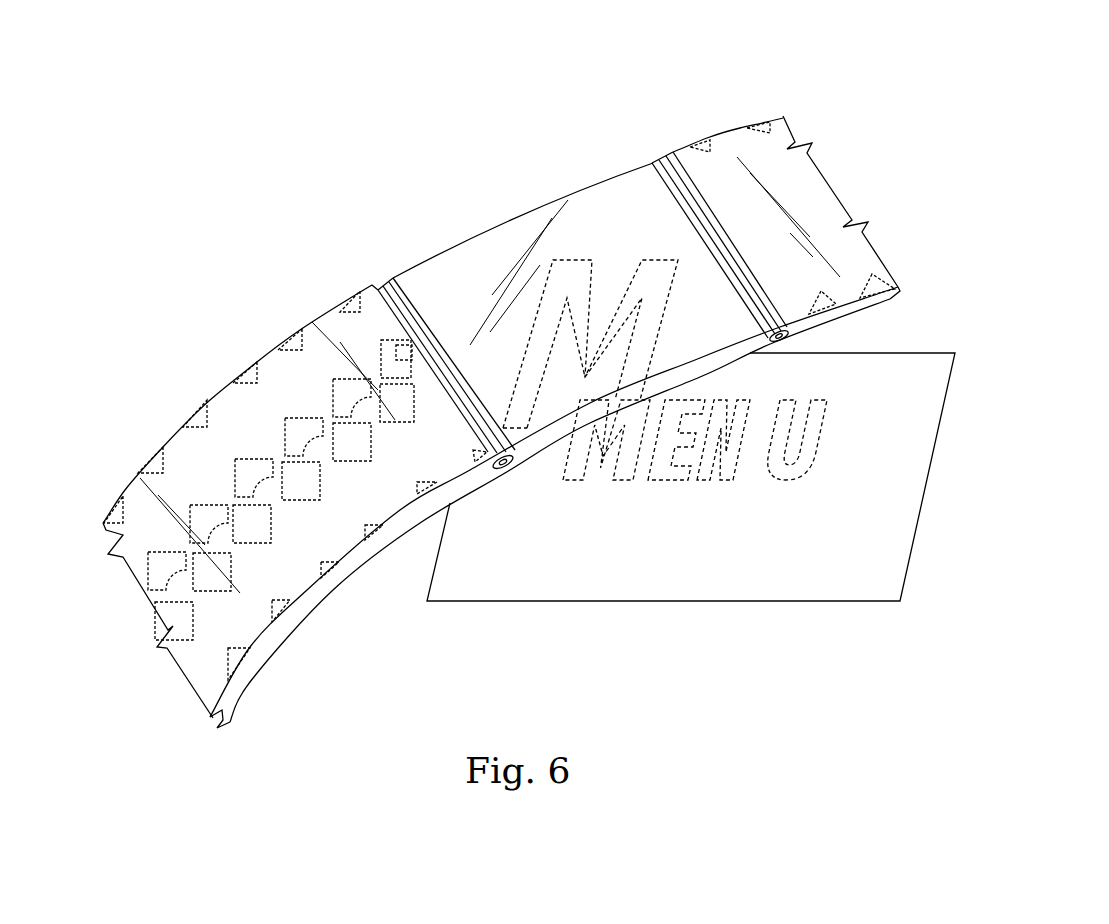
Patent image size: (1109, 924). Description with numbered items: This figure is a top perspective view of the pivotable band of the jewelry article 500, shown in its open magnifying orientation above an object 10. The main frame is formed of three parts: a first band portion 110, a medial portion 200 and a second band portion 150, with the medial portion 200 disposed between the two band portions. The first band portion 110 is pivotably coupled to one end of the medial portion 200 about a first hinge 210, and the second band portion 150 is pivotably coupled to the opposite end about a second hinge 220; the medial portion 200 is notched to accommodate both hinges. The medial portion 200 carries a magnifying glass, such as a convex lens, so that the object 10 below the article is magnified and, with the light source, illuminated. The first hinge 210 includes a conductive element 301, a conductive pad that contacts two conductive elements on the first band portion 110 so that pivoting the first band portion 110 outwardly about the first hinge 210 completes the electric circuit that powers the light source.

The jewelry article 500 is at (875, 82).
The object 10 is at (928, 352).
The first band portion 110 is at (288, 392).
The medial portion 200 is at (615, 210).
The second band portion 150 is at (723, 158).
The first hinge 210 is at (507, 470).
The second hinge 220 is at (792, 339).
The conductive element 301 is at (423, 318).